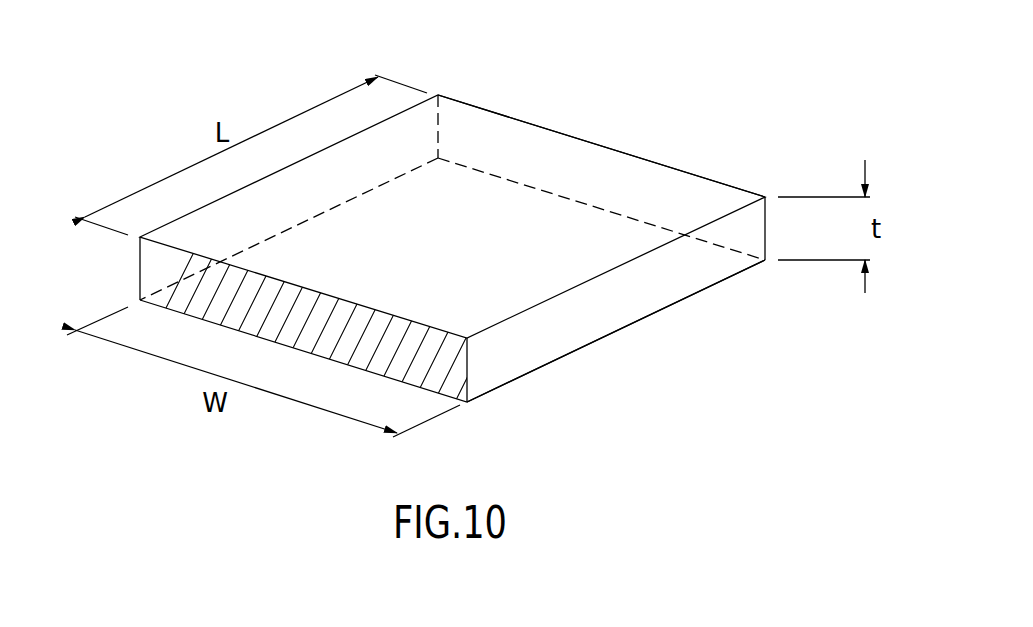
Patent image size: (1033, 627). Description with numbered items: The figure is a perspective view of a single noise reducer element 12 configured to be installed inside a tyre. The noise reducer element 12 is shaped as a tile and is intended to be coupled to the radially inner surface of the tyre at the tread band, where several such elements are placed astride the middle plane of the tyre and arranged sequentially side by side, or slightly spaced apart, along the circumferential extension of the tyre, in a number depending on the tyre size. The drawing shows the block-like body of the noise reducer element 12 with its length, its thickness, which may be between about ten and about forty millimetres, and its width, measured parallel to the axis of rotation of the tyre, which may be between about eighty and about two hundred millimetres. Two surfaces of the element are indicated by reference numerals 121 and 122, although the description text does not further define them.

The noise reducer element 12 is at (610, 423).
The side surface 121 is at (627, 297).
The top surface 122 is at (552, 162).